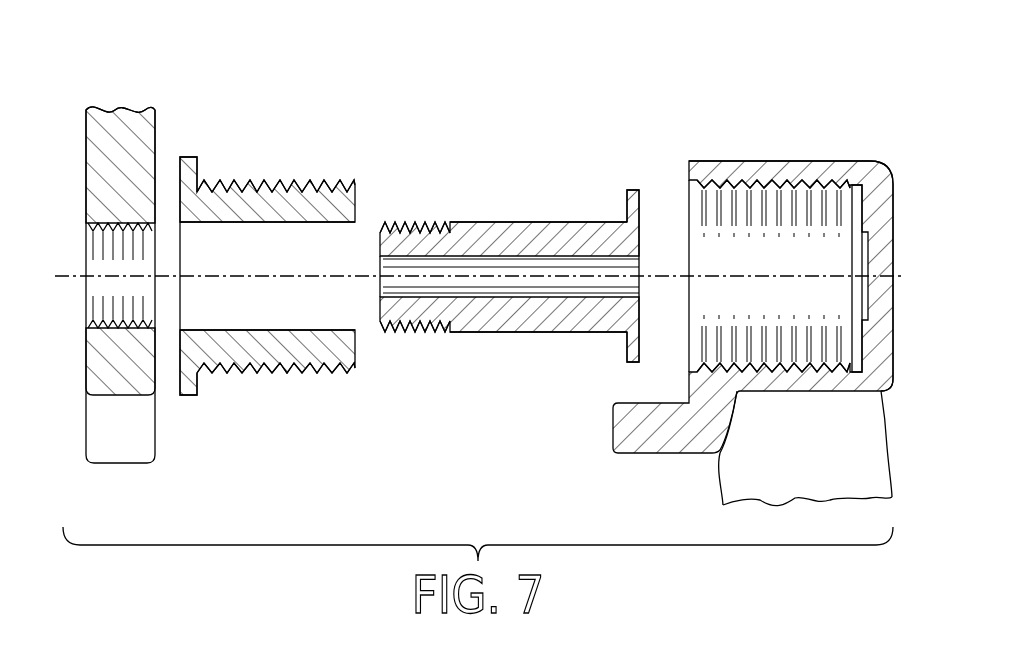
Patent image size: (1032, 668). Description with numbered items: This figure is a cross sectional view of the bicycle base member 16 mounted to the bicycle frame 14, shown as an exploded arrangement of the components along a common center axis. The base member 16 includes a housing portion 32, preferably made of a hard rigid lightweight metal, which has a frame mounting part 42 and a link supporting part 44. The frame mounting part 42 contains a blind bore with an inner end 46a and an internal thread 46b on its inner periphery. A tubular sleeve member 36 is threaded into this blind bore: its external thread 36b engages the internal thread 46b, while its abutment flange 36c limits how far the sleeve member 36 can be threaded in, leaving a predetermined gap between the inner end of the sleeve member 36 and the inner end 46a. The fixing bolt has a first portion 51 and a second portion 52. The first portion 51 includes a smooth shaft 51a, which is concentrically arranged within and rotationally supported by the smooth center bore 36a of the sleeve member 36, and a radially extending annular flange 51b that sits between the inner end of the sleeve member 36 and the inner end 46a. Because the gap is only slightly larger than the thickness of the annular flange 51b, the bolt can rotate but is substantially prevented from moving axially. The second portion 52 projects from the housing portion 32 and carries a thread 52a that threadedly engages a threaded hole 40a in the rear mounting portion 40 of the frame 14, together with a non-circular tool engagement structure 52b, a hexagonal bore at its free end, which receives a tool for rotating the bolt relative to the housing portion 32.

The frame 14 is at (97, 252).
The base member 16 is at (739, 284).
The housing portion 32 is at (783, 152).
The sleeve member 36 is at (270, 219).
The center bore 36a is at (301, 222).
The external thread 36b is at (237, 180).
The abutment flange 36c is at (193, 157).
The rear mounting portion 40 is at (84, 363).
The threaded hole 40a is at (102, 228).
The frame mounting part 42 is at (893, 162).
The link supporting part 44 is at (735, 310).
The inner end 46a is at (862, 258).
The internal thread 46b is at (713, 196).
The first portion 51 is at (499, 275).
The smooth shaft 51a is at (467, 222).
The annular flange 51b is at (630, 190).
The second portion 52 is at (499, 357).
The thread 52a is at (398, 333).
The non-circular tool engagement structure 52b is at (428, 297).